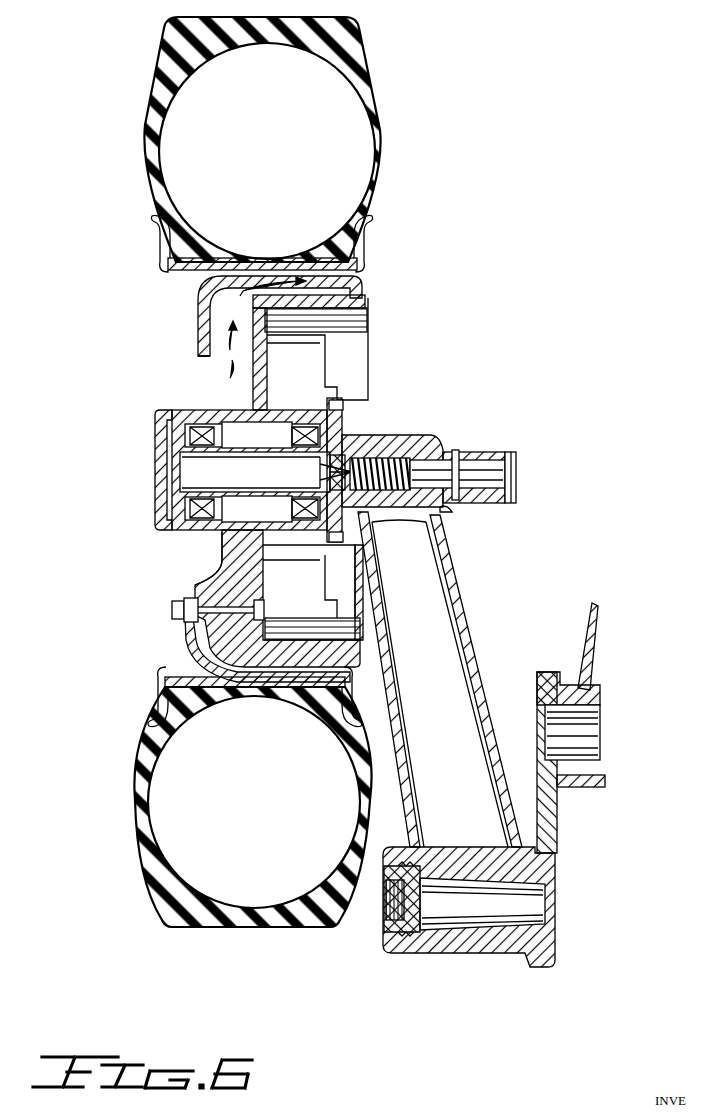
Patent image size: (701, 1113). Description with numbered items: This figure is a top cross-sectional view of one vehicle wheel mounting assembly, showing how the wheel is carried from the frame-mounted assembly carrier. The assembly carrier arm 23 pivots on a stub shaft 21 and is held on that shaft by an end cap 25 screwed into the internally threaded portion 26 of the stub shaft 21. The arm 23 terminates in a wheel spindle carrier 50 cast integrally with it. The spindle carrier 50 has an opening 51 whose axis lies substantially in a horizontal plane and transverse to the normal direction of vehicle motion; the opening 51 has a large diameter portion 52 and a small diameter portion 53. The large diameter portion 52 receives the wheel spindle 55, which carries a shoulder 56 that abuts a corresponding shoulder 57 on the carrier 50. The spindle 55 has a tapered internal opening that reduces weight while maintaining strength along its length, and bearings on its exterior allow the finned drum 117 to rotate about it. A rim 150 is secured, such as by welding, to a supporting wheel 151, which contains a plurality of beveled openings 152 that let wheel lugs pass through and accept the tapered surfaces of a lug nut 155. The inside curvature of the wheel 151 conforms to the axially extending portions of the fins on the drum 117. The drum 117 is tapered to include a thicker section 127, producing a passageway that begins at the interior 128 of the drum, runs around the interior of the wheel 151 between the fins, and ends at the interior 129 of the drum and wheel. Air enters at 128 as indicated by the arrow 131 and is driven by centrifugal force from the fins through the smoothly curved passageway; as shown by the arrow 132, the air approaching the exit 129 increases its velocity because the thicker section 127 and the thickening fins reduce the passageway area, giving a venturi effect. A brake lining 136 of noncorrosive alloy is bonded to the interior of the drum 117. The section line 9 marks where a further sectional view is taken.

The section line 9- 9 is at (380, 766).
The stub shaft 21 is at (463, 940).
The assembly carrier arm 23 is at (478, 668).
The end cap 25 is at (386, 928).
The internally threaded portion 26 is at (427, 952).
The wheel spindle carrier 50 is at (448, 449).
The opening 51 is at (437, 444).
The large diameter portion 52 is at (419, 438).
The small diameter portion 53 is at (448, 505).
The wheel spindle 55 is at (373, 436).
The shoulder 56 is at (349, 434).
The shoulder 57 is at (340, 548).
The drum 117 is at (256, 392).
The thicker section 127 is at (352, 300).
The interior of the drum 128 is at (214, 356).
The interior of the drum and wheel 129 is at (352, 268).
The arrow 131 is at (226, 359).
The arrow 132 is at (260, 298).
The brake lining 136 is at (367, 326).
The rim 150 is at (166, 668).
The supporting wheel 151 is at (197, 304).
The beveled openings 152 is at (198, 590).
The lug nut 155 is at (182, 604).